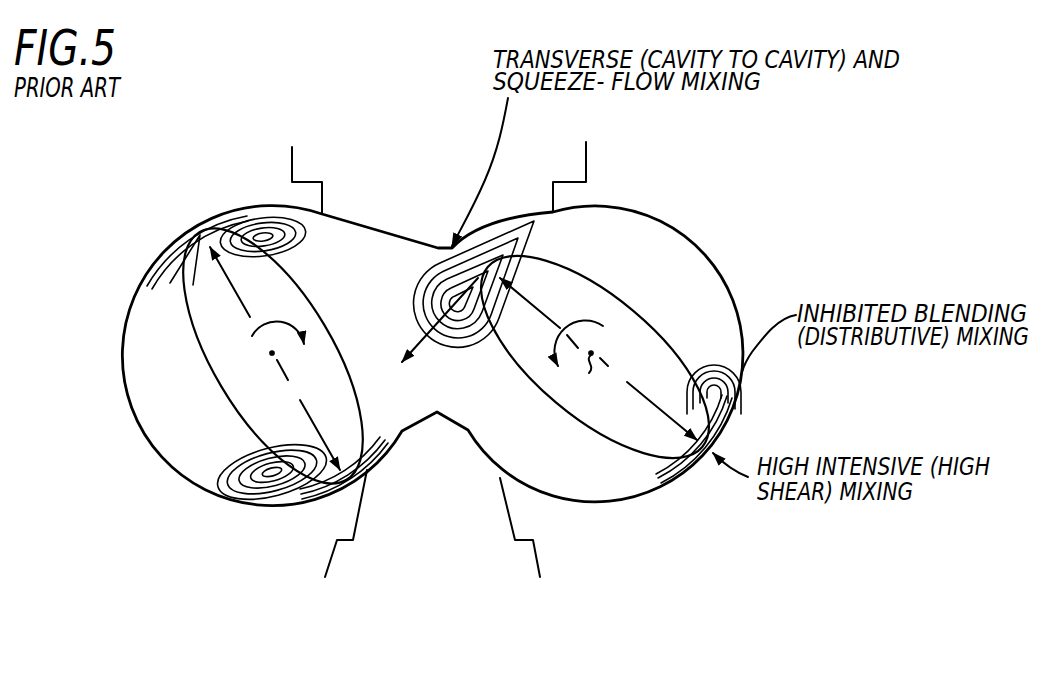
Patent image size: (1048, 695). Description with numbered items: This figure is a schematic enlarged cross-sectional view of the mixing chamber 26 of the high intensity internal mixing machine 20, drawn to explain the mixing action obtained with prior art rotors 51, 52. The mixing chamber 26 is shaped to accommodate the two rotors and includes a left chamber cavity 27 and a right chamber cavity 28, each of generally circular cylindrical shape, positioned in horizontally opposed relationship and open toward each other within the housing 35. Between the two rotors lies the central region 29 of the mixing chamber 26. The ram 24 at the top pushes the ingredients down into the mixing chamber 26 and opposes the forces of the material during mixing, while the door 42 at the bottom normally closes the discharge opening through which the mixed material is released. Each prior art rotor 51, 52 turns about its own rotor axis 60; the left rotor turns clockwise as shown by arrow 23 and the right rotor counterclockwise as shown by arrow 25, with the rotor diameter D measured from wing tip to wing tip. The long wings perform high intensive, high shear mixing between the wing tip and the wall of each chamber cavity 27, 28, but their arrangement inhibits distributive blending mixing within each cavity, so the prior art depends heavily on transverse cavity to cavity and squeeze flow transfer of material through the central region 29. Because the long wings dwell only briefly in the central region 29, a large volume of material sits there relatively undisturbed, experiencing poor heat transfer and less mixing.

The internal mixing machine 20 is at (128, 299).
The arrow 23 is at (289, 321).
The ram 24 is at (439, 178).
The arrow 25 is at (597, 319).
The mixing chamber 26 is at (558, 443).
The left chamber cavity 27 is at (181, 441).
The right chamber cavity 28 is at (725, 318).
The central region 29 is at (452, 401).
The housing 35 is at (668, 231).
The door 42 is at (432, 523).
The prior art rotor 51 is at (212, 381).
The prior art rotor 52 is at (666, 327).
The rotor axis 60 is at (268, 357).